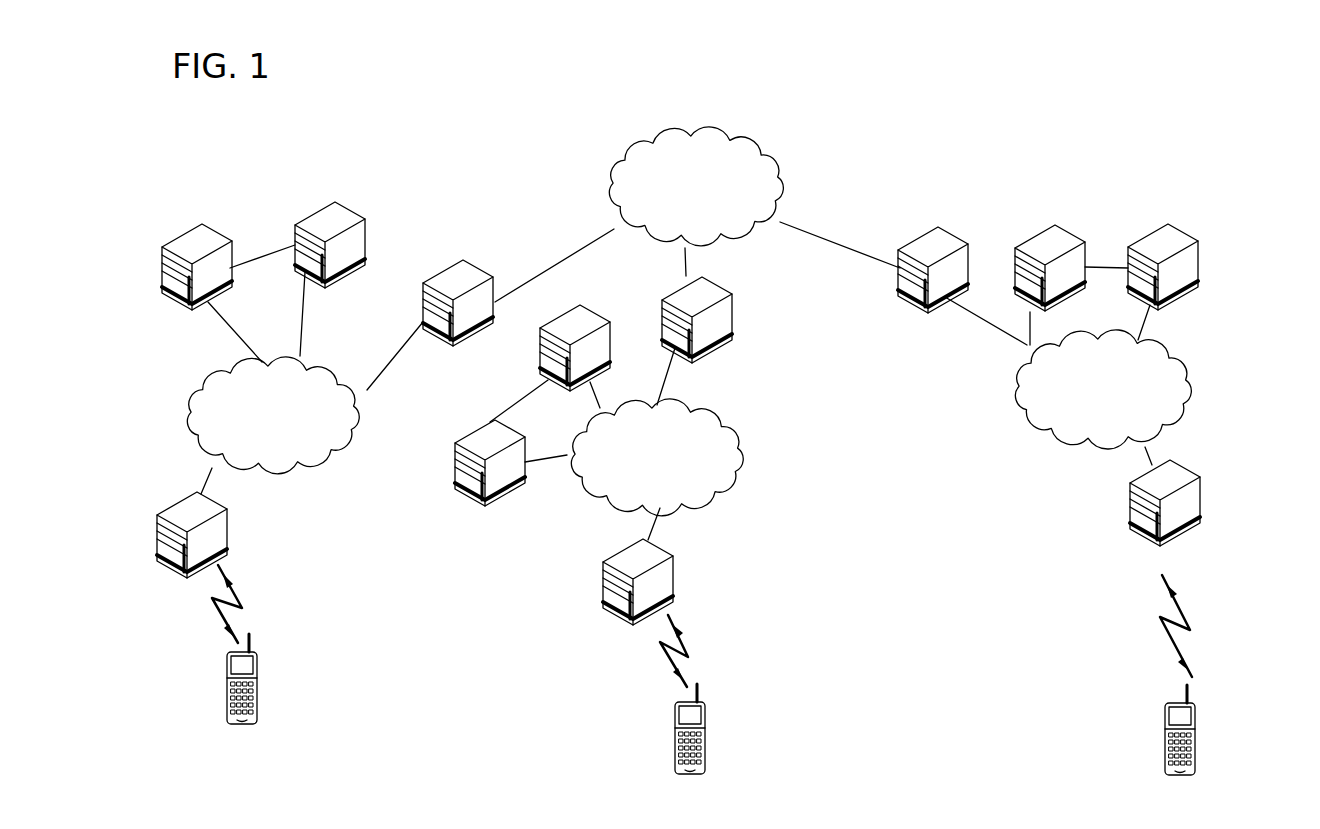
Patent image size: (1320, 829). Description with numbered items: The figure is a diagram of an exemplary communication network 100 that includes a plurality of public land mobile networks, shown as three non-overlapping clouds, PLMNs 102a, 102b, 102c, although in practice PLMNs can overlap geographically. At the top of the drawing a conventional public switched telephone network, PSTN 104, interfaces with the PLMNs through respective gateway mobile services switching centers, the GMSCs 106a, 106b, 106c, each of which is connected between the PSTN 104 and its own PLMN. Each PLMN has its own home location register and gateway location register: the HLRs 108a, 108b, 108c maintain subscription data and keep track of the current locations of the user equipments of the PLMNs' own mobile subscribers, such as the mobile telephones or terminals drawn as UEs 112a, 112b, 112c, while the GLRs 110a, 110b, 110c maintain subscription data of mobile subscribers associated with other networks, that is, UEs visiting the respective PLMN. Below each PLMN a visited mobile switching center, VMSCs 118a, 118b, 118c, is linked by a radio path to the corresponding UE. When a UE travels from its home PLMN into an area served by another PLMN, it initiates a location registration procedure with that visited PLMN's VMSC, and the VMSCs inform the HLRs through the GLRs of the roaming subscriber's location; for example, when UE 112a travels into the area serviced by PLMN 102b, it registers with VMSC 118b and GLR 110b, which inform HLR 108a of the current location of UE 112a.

The communication network 100 is at (1193, 106).
The public land mobile network (PLMN A) 102a is at (190, 372).
The public land mobile network (PLMN B) 102b is at (726, 404).
The public land mobile network (PLMN C) 102c is at (1172, 337).
The public switched telephone network (PSTN) 104 is at (605, 162).
The gateway mobile services switching center (GMSCa) 106a is at (477, 266).
The gateway mobile services switching center (GMSCb) 106b is at (715, 298).
The gateway mobile services switching center (GMSCc) 106c is at (950, 246).
The home location register (HLRa) 108a is at (210, 242).
The home location register (HLRb) 108b is at (590, 323).
The home location register (HLRc) 108c is at (1183, 243).
The gateway location register (GLRa) 110a is at (350, 222).
The gateway location register (GLRb) 110b is at (474, 437).
The gateway location register (GLRc) 110c is at (1063, 246).
The user equipment 112a is at (258, 678).
The user equipment 112b is at (706, 728).
The user equipment 112c is at (1196, 727).
The visited mobile switching center (VMSCa) 118a is at (207, 506).
The visited mobile switching center (VMSCb) 118b is at (655, 557).
The visited mobile switching center (VMSCc) 118c is at (1183, 483).